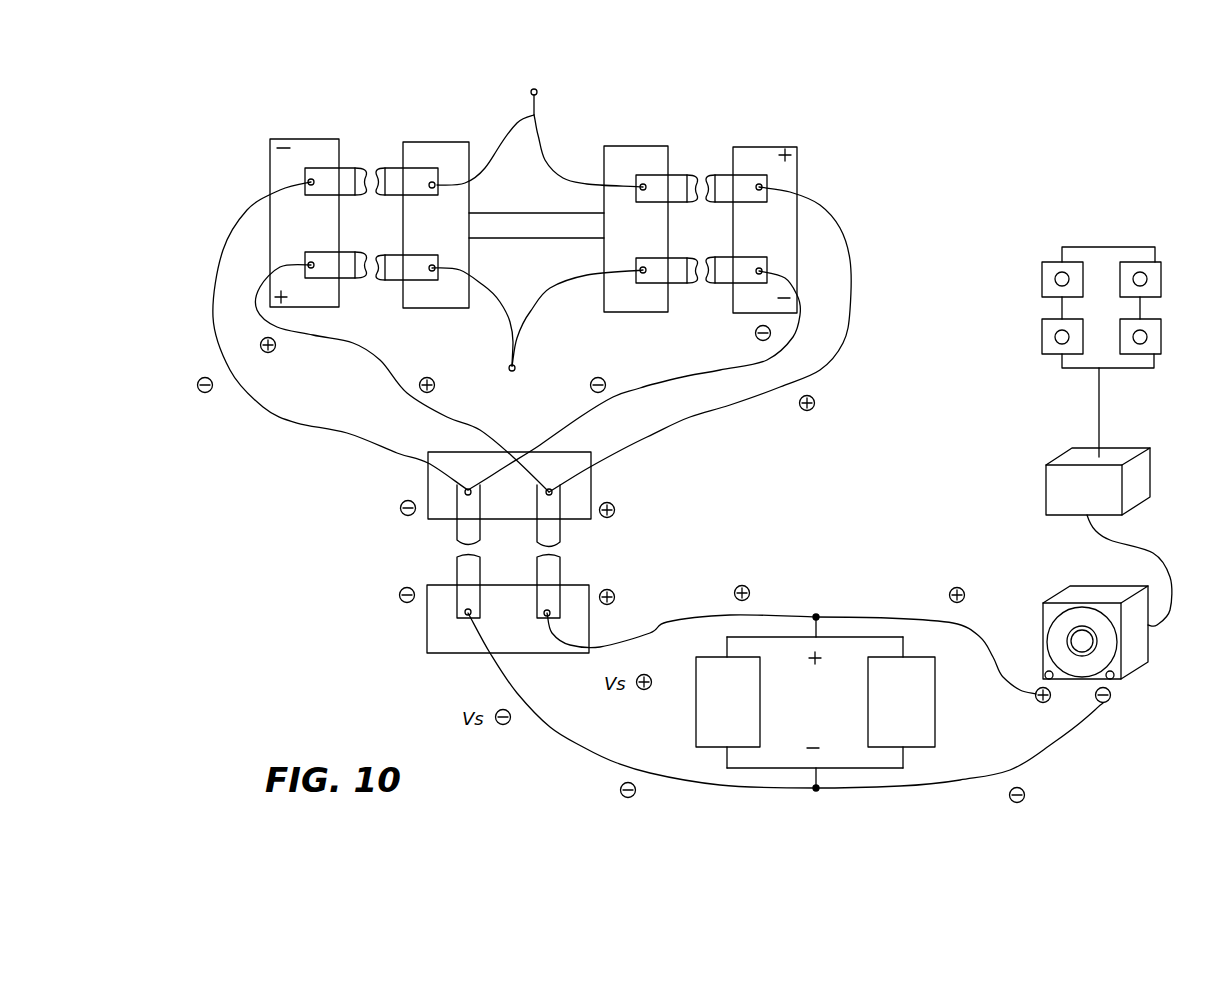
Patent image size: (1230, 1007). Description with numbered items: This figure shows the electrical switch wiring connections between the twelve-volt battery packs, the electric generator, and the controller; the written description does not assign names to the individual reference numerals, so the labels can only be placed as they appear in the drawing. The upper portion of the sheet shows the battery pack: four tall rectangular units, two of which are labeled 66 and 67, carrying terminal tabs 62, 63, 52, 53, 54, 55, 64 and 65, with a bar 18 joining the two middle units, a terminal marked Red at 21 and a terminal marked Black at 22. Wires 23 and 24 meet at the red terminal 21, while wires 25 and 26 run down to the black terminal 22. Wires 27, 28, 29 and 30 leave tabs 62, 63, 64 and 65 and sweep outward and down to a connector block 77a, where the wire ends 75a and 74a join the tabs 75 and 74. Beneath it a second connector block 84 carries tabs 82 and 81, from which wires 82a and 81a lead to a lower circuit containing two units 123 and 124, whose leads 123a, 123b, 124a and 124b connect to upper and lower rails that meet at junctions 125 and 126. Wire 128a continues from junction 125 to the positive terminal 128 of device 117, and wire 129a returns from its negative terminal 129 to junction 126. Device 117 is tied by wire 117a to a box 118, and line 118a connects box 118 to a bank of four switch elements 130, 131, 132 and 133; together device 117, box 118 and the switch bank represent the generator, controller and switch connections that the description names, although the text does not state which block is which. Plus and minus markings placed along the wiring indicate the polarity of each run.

The bus bar 18 is at (548, 235).
The red terminal 21 is at (531, 92).
The black terminal 22 is at (530, 387).
The wire 23 is at (510, 130).
The wire 24 is at (557, 175).
The wire 25 is at (498, 288).
The wire 26 is at (577, 318).
The wire 27 is at (247, 213).
The wire 28 is at (377, 357).
The wire 29 is at (853, 266).
The wire 30 is at (687, 375).
The battery terminal tag 52 is at (417, 193).
The battery terminal tag 53 is at (417, 278).
The battery terminal tag 54 is at (675, 199).
The battery terminal tag 55 is at (675, 281).
The battery terminal tag 62 is at (343, 193).
The battery terminal tag 63 is at (343, 276).
The battery terminal tag 64 is at (746, 199).
The battery terminal tag 65 is at (746, 281).
The battery 66 is at (313, 231).
The battery 67 is at (778, 236).
The connector tab 74 is at (563, 530).
The wire 74a is at (650, 438).
The connector tab 75 is at (453, 527).
The wire 75a is at (350, 437).
The connector block 77a is at (530, 500).
The connector tab 81 is at (563, 573).
The wire 81a is at (670, 618).
The connector tab 82 is at (455, 573).
The wire 82a is at (557, 730).
The connector block 84 is at (520, 633).
The solenoid 117 is at (1057, 593).
The wire 117a is at (1192, 542).
The control module 118 is at (1046, 478).
The wire 118a is at (1099, 403).
The load 123 is at (748, 709).
The lead 123a is at (727, 647).
The lead 123b is at (727, 760).
The load 124 is at (922, 709).
The lead 124a is at (903, 645).
The lead 124b is at (903, 761).
The junction 125 is at (817, 614).
The junction 126 is at (817, 792).
The positive terminal 128 is at (1037, 707).
The wire 128a is at (1000, 648).
The negative terminal 129 is at (1107, 707).
The wire 129a is at (1053, 750).
The switch 130 is at (1042, 330).
The switch 131 is at (1042, 273).
The switch 132 is at (1161, 273).
The switch 133 is at (1161, 330).